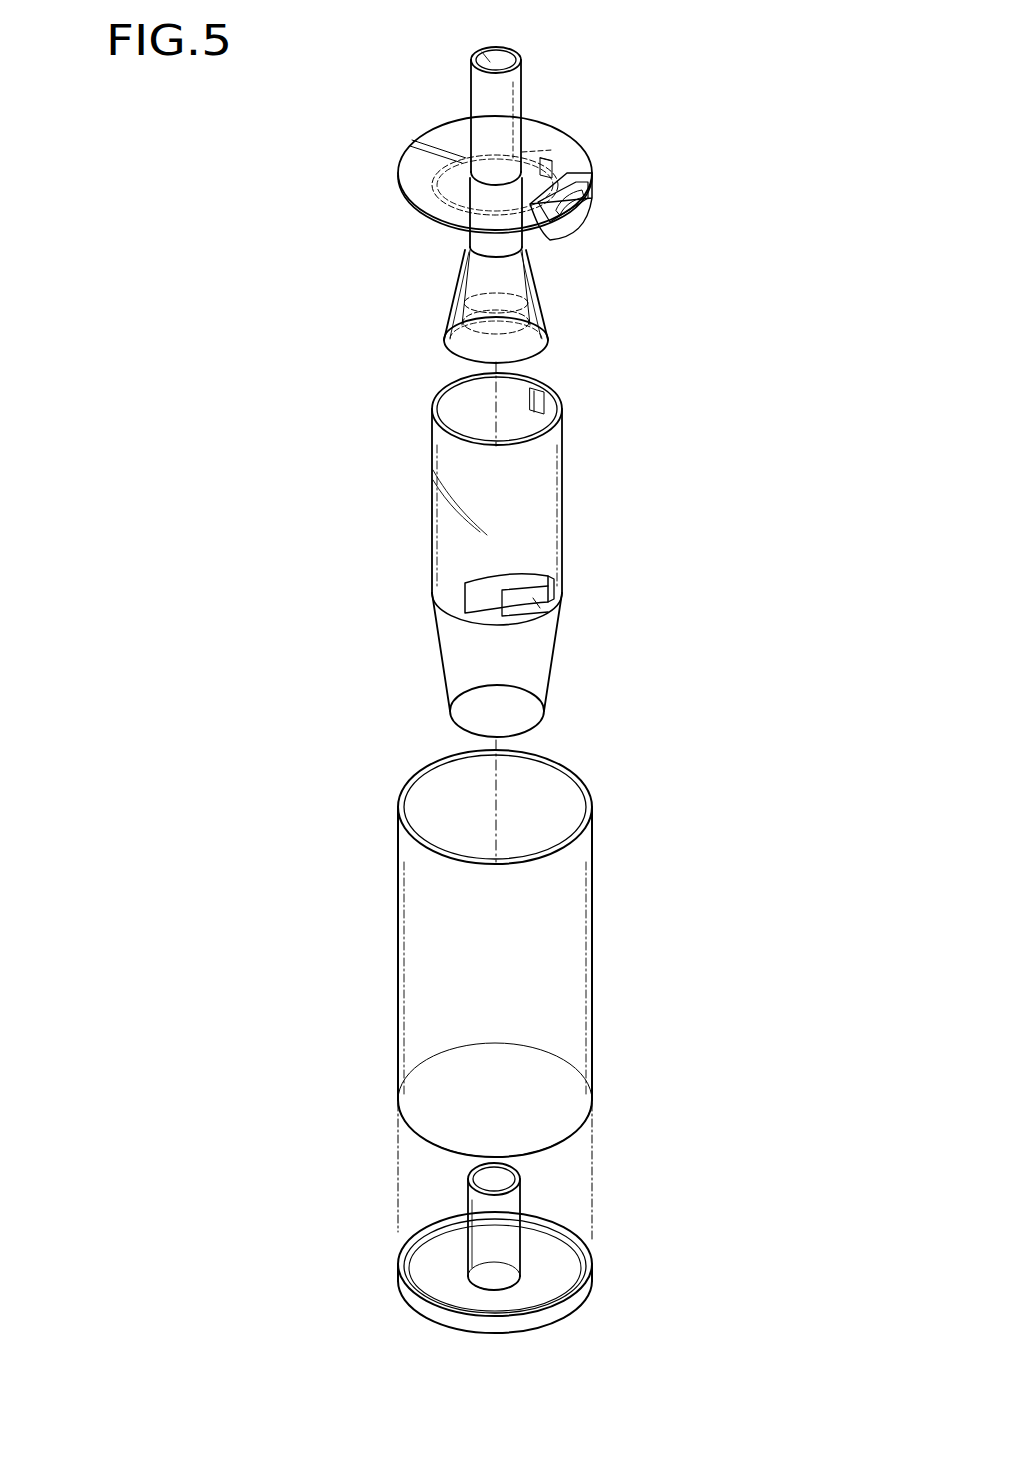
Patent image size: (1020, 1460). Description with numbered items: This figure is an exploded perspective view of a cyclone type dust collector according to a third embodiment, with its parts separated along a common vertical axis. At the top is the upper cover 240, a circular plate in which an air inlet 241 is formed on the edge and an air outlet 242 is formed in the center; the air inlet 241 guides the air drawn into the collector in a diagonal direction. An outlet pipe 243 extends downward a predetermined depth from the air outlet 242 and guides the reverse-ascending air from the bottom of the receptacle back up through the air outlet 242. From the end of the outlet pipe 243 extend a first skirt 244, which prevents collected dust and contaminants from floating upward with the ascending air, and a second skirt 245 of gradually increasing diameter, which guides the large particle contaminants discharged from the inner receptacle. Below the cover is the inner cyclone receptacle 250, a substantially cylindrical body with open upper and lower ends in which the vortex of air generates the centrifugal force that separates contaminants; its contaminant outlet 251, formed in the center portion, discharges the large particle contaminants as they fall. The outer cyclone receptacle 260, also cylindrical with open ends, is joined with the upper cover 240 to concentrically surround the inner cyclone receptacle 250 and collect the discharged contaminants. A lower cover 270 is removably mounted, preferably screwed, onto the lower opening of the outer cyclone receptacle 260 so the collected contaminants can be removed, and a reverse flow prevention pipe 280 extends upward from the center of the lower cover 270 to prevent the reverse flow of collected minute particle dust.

The upper cover 240 is at (600, 122).
The air inlet 241 is at (588, 186).
The air outlet 242 is at (477, 45).
The outlet pipe 243 is at (477, 242).
The first skirt 244 is at (520, 306).
The second skirt 245 is at (448, 313).
The inner cyclone receptacle 250 is at (581, 481).
The contaminant outlet 251 is at (534, 602).
The outer cyclone receptacle 260 is at (617, 913).
The lower cover 270 is at (608, 1238).
The reverse flow prevention pipe 280 is at (481, 1207).